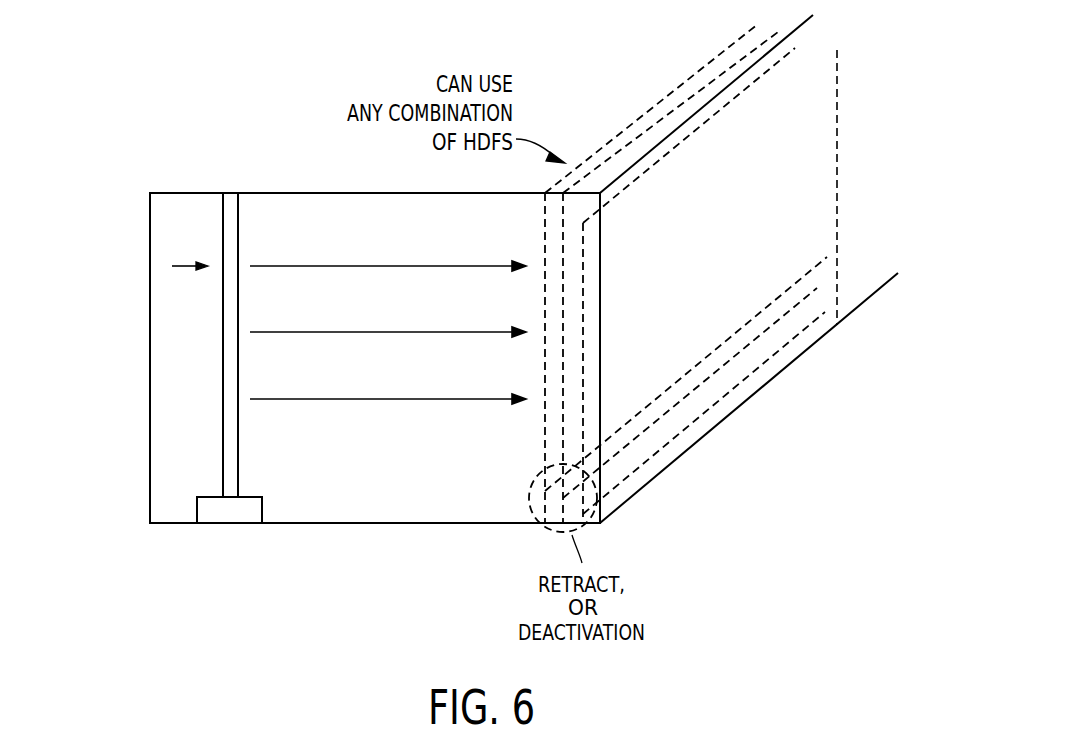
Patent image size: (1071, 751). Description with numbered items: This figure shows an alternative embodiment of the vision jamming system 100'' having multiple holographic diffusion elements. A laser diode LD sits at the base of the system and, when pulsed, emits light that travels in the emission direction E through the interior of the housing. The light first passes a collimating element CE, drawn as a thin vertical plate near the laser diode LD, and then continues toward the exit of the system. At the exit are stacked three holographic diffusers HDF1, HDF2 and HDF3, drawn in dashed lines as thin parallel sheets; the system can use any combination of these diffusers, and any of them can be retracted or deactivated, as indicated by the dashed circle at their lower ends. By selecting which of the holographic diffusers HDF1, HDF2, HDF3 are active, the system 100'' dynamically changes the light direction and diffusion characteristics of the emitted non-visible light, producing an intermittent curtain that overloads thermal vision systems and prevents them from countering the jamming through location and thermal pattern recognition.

The vision jamming system 100'' is at (485, 269).
The collimating element CE is at (238, 226).
The laser diode LD is at (228, 516).
The emission direction E is at (190, 287).
The holographic diffuser HDF1 is at (687, 105).
The holographic diffuser HDF2 is at (782, 396).
The holographic diffuser HDF3 is at (625, 133).